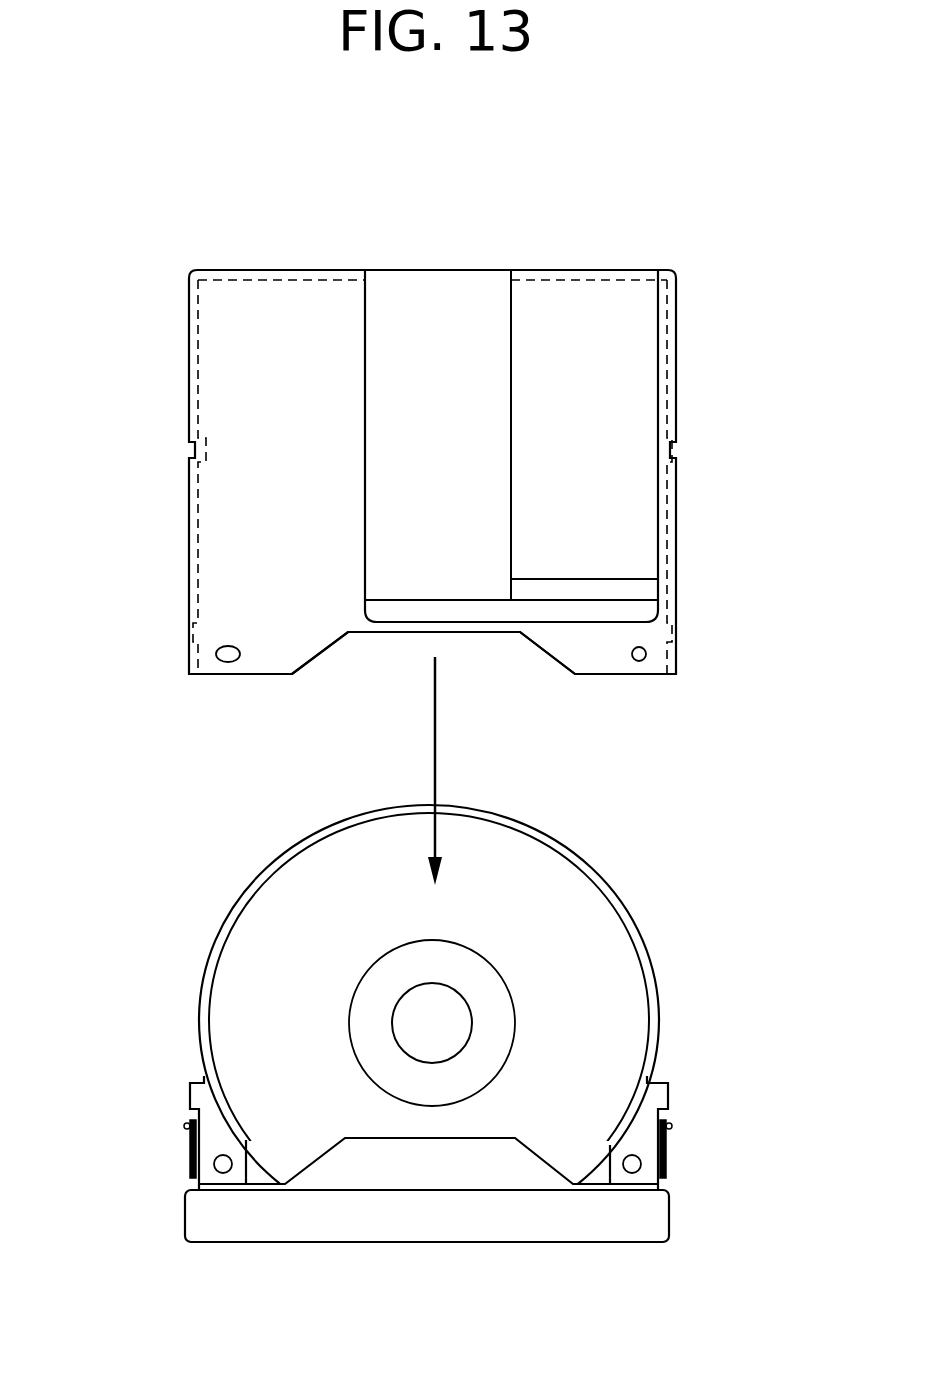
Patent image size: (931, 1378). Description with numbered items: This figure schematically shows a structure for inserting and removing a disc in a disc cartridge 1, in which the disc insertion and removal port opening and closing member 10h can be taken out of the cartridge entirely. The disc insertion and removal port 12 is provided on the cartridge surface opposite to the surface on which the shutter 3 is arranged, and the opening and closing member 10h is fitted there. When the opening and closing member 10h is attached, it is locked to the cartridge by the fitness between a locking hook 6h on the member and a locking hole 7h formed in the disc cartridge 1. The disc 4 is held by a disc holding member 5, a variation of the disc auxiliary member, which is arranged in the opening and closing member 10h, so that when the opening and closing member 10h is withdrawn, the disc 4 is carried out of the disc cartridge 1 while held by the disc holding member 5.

The disc cartridge 1 is at (244, 373).
The shutter 3 is at (455, 296).
The locking hole 7h is at (190, 632).
The disc insertion and removal port 12 is at (596, 676).
The disc 4 is at (560, 914).
The disc holding member 5 is at (657, 984).
The locking hook 6h is at (186, 1126).
The disc insertion and removal port opening and closing member 10h is at (643, 1220).